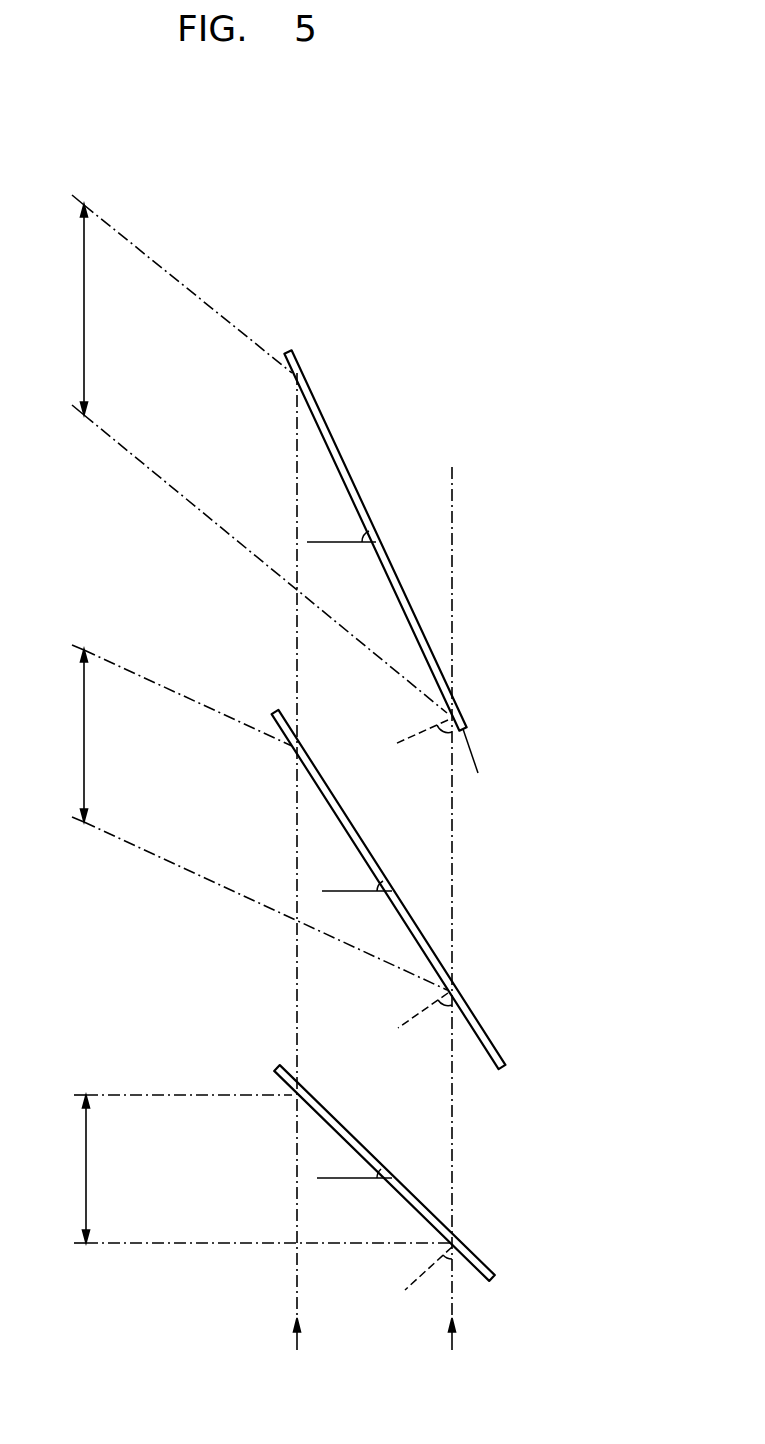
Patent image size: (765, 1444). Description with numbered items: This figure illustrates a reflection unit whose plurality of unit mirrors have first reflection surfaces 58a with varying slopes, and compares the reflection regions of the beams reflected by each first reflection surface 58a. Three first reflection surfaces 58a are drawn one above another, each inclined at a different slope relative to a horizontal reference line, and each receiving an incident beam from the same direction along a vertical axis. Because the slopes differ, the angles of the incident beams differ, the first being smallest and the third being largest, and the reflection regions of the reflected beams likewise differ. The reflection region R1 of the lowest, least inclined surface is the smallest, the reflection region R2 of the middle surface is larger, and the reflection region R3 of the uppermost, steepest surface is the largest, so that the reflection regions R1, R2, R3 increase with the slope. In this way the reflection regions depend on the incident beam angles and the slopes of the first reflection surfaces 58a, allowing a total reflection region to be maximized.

The first reflection surface 58a is at (400, 593).
The reflection region R1 is at (249, 1169).
The reflection region R2 is at (246, 817).
The reflection region R3 is at (246, 454).